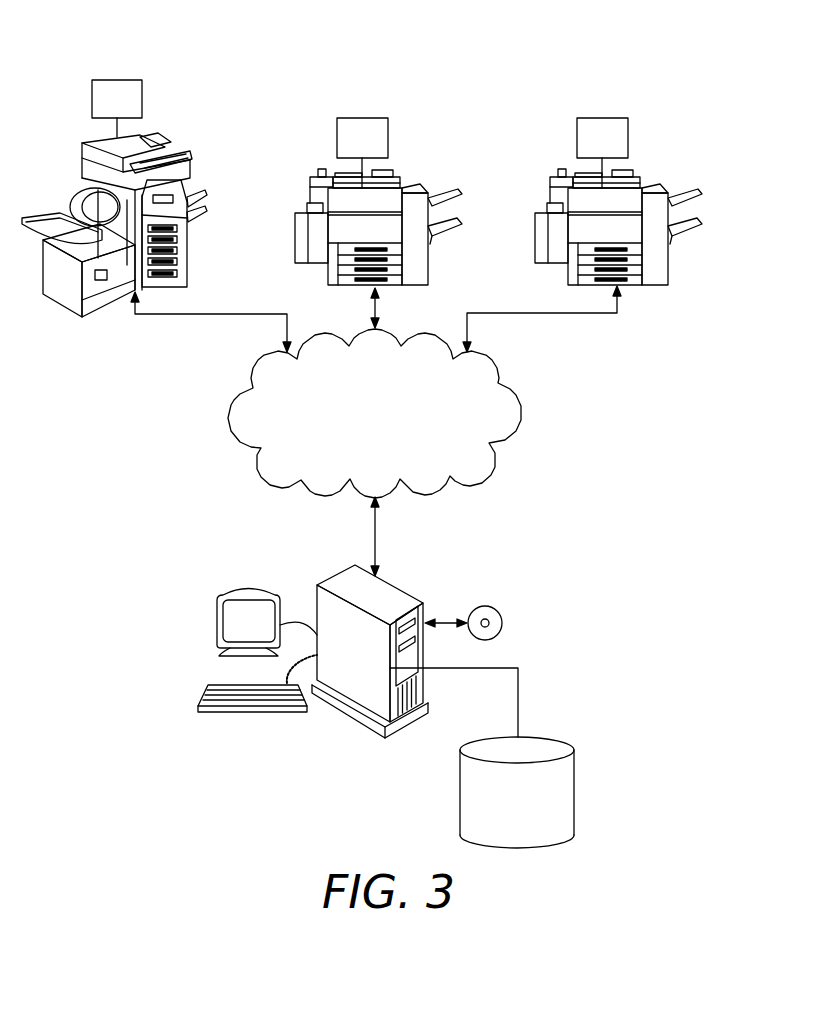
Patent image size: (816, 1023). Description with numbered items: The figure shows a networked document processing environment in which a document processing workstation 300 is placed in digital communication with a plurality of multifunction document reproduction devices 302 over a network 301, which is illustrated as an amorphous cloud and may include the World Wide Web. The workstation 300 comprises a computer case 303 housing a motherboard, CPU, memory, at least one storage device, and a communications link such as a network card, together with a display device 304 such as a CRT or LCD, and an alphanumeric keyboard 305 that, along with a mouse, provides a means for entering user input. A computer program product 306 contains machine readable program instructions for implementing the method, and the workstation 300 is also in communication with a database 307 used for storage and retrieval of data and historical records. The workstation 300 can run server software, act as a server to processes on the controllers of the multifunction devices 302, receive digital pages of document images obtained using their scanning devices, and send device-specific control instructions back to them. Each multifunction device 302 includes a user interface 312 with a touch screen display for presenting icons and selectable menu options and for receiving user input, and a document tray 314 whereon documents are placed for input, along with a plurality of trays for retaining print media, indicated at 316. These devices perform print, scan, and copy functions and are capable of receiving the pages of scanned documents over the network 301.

The document processing workstation 300 is at (508, 570).
The network 301 is at (523, 415).
The multifunction document reproduction device 302 is at (175, 110).
The computer case 303 is at (390, 583).
The display device 304 is at (250, 588).
The alphanumeric keyboard 305 is at (252, 714).
The computer program product 306 is at (498, 635).
The database 307 is at (558, 740).
The user interface 312 is at (118, 77).
The document tray 314 is at (192, 200).
The paper trays 316 is at (177, 267).